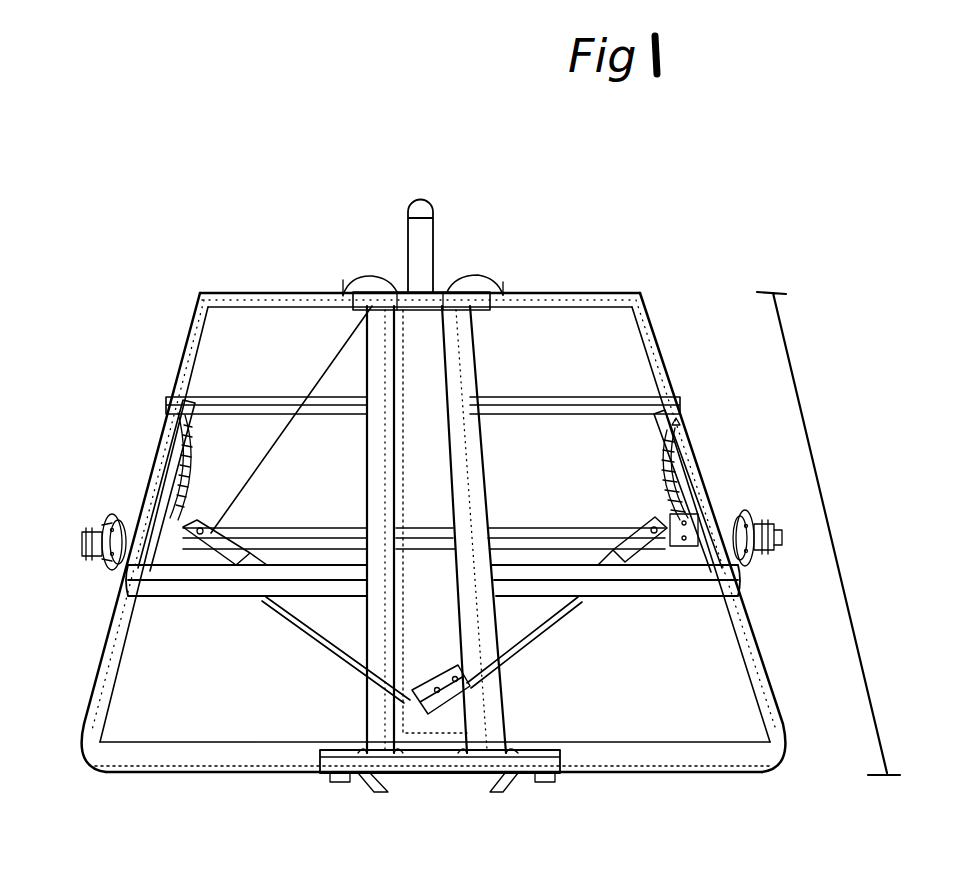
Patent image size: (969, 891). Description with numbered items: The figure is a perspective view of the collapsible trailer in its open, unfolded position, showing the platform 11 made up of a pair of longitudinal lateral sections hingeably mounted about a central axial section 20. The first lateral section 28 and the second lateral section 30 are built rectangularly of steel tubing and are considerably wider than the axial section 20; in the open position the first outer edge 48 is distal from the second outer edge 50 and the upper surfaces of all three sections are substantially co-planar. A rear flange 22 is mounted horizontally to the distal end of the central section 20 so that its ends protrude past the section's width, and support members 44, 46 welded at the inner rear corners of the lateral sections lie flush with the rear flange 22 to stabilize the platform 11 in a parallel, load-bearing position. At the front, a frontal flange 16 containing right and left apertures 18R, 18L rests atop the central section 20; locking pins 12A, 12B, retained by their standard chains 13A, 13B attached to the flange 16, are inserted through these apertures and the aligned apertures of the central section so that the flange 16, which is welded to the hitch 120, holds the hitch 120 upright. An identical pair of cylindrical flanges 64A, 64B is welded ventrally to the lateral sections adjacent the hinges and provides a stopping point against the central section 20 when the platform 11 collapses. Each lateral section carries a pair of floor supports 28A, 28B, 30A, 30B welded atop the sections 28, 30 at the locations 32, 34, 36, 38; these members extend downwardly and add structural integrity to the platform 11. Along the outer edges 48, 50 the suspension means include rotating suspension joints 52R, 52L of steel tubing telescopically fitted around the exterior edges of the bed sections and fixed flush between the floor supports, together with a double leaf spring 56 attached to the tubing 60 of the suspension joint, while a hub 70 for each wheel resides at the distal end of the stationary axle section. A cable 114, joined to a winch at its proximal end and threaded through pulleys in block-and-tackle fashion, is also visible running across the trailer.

The platform 11 is at (541, 533).
The locking pin 12A is at (397, 291).
The locking pin 12B is at (447, 291).
The standard chain 13A is at (344, 283).
The standard chain 13B is at (499, 289).
The frontal flange 16 is at (481, 310).
The left aperture 18L is at (401, 312).
The right aperture 18R is at (442, 312).
The central axial section 20 is at (402, 482).
The rear flange 22 is at (433, 774).
The first lateral section 28 is at (642, 296).
The floor support 28A is at (547, 397).
The floor support 28B is at (617, 600).
The second lateral section 30 is at (205, 296).
The floor support 30A is at (233, 397).
The floor support 30B is at (197, 600).
The floor support location 32 is at (677, 398).
The floor support location 34 is at (740, 582).
The floor support location 36 is at (130, 586).
The floor support location 38 is at (172, 402).
The support member 44 is at (555, 782).
The support member 46 is at (325, 780).
The first outer edge 48 is at (760, 641).
The second outer edge 50 is at (100, 672).
The rotating suspension joint 52L is at (157, 444).
The rotating suspension joint 52R is at (695, 453).
The leaf spring 56 is at (662, 467).
The tubing of the rotating suspension joint 60 is at (150, 491).
The cylindrical flange 64A is at (380, 792).
The cylindrical flange 64B is at (492, 794).
The hub 70 is at (98, 522).
The cable 114 is at (328, 368).
The hitch 120 is at (433, 226).